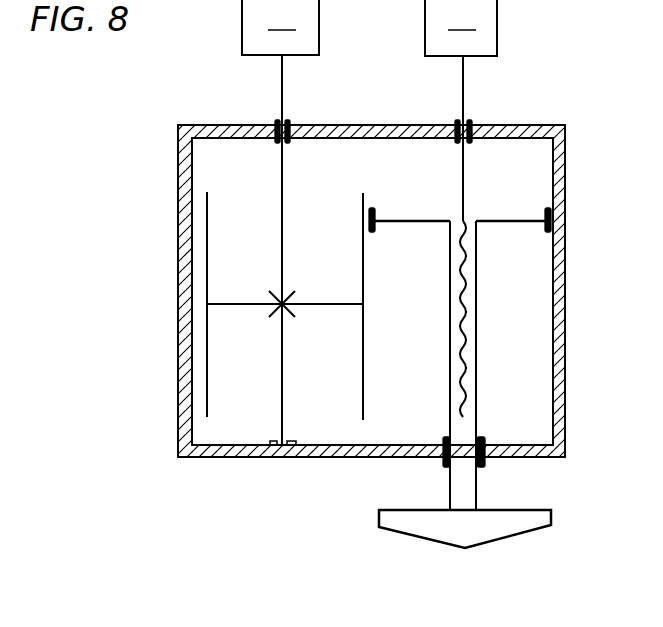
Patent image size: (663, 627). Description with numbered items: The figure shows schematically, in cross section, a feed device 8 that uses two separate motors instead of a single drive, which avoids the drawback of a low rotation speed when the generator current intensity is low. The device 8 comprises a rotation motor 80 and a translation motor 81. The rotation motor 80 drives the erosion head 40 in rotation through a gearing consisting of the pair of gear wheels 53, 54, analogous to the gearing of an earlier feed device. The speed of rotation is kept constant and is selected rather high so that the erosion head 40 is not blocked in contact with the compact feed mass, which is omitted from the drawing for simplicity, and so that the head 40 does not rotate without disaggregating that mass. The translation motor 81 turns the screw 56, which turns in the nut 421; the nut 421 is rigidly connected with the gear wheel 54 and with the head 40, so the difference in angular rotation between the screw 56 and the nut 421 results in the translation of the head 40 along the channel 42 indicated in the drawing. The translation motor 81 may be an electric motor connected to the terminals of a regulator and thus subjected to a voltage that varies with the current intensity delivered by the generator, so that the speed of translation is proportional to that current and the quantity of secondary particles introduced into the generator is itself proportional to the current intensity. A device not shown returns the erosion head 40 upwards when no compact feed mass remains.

The device 8 is at (572, 183).
The rotation motor 80 is at (280, 222).
The translation motor 81 is at (461, 28).
The gear wheel 53 is at (208, 234).
The gear wheel 54 is at (385, 220).
The screw 56 is at (466, 191).
The channel 42 is at (477, 358).
The nut 421 is at (477, 292).
The erosion head 40 is at (497, 510).